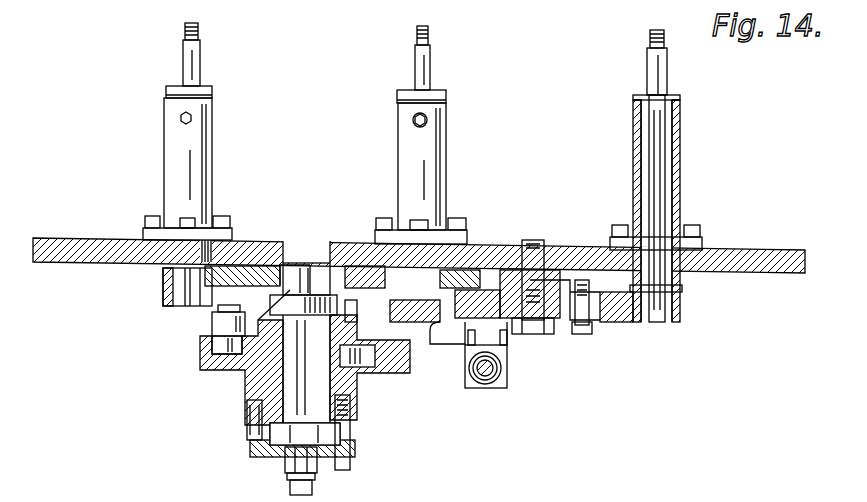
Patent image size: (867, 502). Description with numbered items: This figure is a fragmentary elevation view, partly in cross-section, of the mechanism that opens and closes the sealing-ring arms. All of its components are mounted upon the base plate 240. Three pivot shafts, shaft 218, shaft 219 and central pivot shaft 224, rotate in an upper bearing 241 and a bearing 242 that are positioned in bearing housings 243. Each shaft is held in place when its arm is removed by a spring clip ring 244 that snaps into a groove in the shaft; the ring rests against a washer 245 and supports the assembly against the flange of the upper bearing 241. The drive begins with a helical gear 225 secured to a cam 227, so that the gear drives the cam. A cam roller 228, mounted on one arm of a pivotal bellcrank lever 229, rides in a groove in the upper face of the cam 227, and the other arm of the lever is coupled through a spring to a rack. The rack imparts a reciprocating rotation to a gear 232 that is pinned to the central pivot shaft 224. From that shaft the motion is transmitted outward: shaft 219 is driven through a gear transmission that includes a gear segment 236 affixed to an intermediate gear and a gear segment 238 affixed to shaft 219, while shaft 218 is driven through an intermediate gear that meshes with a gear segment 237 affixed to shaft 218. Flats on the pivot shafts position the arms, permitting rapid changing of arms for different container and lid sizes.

The pivot shaft 218 is at (200, 70).
The pivot shaft 219 is at (668, 80).
The central pivot shaft 224 is at (432, 66).
The helical gear 225 is at (247, 428).
The cam 227 is at (204, 366).
The cam roller 228 is at (218, 350).
The pivotal bellcrank lever 229 is at (212, 326).
The gear 232 is at (376, 312).
The gear segment 236 is at (565, 338).
The gear segment 237 is at (165, 292).
The gear segment 238 is at (682, 315).
The base plate 240 is at (104, 263).
The upper bearing 241 is at (680, 108).
The bearing 242 is at (683, 288).
The bearing housing 243 is at (212, 176).
The spring clip ring 244 is at (648, 95).
The washer 245 is at (212, 92).